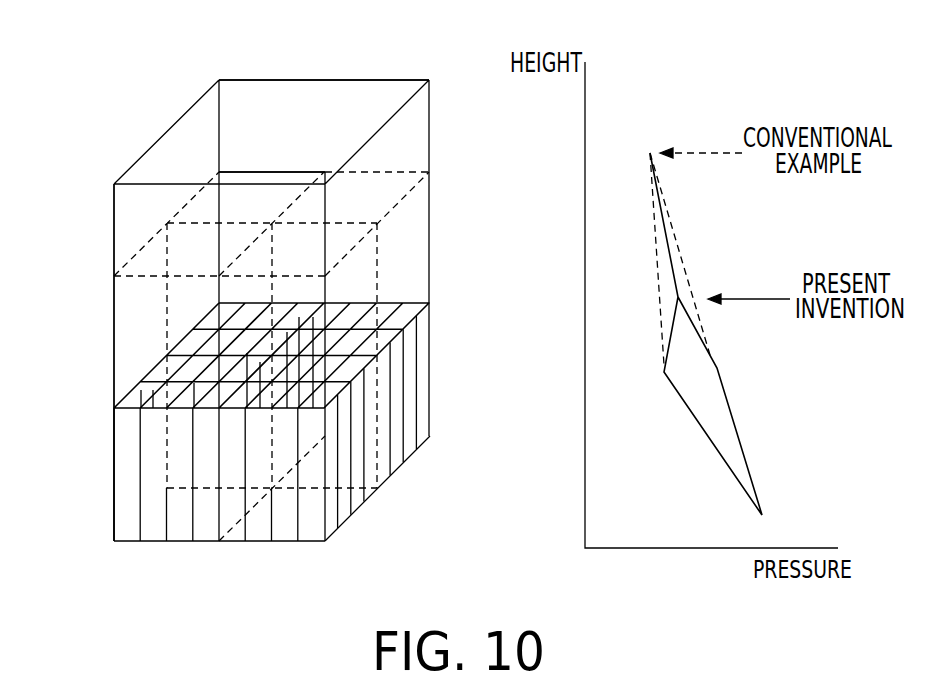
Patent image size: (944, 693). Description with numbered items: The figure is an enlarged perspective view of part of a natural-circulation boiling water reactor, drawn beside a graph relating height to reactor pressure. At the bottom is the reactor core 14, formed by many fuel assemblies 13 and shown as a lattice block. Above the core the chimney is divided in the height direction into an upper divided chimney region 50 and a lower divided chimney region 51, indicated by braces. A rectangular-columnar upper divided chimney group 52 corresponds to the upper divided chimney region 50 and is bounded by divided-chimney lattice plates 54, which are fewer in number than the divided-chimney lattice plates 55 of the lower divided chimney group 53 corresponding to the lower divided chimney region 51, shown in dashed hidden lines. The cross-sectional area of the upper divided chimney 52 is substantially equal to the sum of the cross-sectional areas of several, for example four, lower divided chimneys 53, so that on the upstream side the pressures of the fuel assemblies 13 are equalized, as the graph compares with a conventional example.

The fuel assembly 13 is at (182, 503).
The reactor core 14 is at (98, 443).
The upper divided chimney region 50 is at (438, 80).
The lower divided chimney region 51 is at (438, 176).
The upper divided chimney group 52 is at (373, 78).
The lower divided chimney group 53 is at (380, 289).
The divided-chimney lattice plate 54 is at (325, 79).
The divided-chimney lattice plate 55 is at (120, 324).